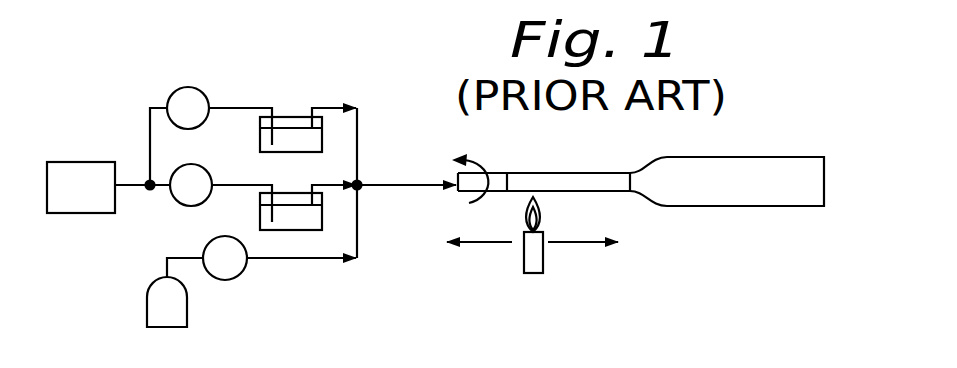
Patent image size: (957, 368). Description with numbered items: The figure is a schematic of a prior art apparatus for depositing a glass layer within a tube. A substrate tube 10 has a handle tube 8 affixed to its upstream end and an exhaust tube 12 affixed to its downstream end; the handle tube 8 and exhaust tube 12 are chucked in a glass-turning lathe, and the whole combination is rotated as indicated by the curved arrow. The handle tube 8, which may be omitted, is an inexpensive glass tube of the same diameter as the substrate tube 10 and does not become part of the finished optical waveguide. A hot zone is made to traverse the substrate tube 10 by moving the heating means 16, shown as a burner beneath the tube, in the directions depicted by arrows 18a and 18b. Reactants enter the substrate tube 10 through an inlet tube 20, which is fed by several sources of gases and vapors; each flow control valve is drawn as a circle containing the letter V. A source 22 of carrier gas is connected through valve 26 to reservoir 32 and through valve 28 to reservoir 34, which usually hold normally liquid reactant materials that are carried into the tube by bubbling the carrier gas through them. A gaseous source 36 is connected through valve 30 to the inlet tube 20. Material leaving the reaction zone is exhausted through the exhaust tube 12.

The handle tube 8 is at (472, 180).
The substrate tube 10 is at (568, 172).
The exhaust tube 12 is at (792, 157).
The heating means 16 is at (533, 273).
The arrow 18a is at (477, 242).
The arrow 18b is at (582, 242).
The inlet tube 20 is at (408, 182).
The source of carrier gas 22 is at (78, 213).
The valve 26 is at (188, 87).
The valve 28 is at (195, 164).
The valve 30 is at (231, 279).
The reservoir 32 is at (322, 142).
The reservoir 34 is at (322, 214).
The gaseous source 36 is at (146, 300).